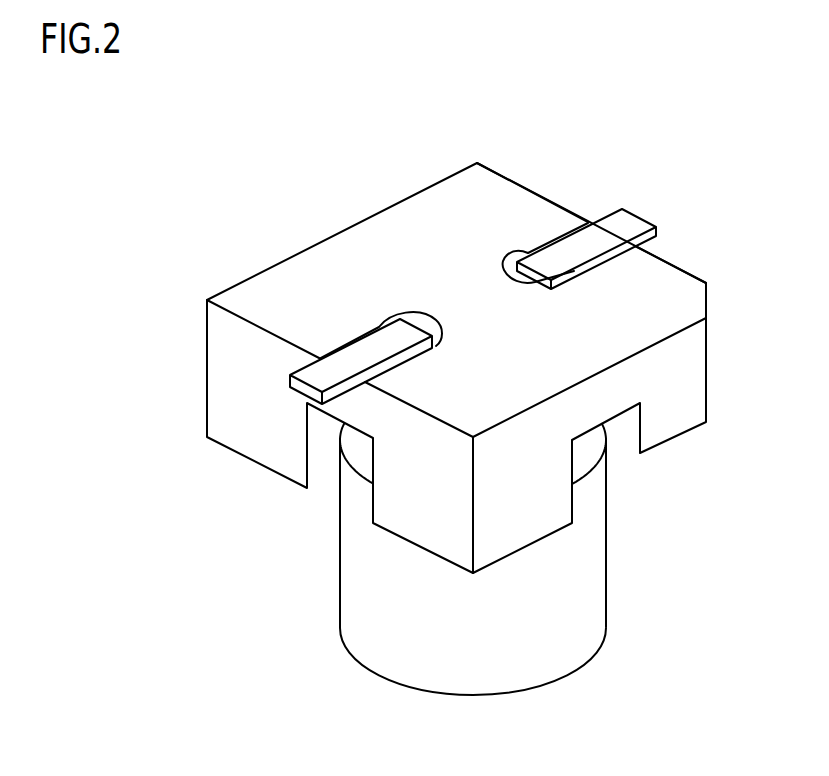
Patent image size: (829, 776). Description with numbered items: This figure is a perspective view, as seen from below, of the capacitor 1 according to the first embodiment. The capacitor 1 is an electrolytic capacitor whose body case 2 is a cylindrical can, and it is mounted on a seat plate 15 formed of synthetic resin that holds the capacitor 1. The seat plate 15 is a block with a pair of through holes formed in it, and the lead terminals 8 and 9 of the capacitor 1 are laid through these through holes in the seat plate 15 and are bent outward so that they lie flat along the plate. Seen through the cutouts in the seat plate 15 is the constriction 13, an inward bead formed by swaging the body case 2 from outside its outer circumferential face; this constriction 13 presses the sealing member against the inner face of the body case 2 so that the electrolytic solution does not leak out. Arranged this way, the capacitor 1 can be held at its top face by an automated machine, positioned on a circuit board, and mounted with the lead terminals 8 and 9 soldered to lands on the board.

The capacitor 1 is at (495, 429).
The body case 2 is at (462, 559).
The lead terminal 8 is at (366, 352).
The lead terminal 9 is at (619, 216).
The constriction 13 is at (358, 455).
The seat plate 15 is at (707, 385).